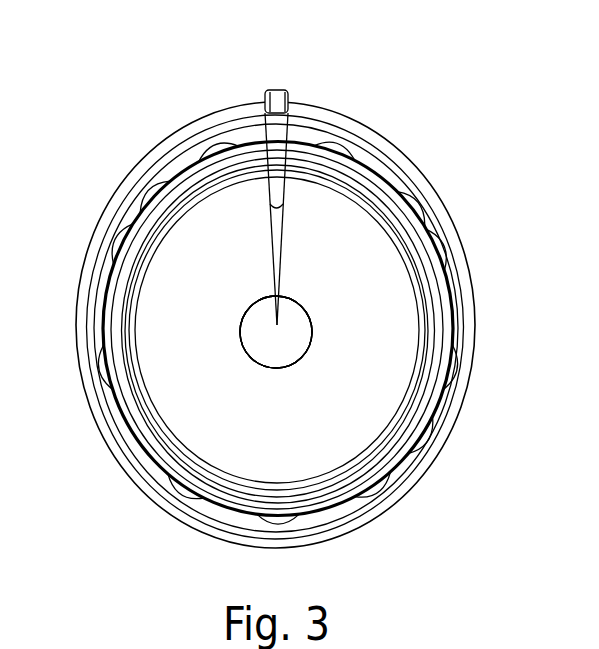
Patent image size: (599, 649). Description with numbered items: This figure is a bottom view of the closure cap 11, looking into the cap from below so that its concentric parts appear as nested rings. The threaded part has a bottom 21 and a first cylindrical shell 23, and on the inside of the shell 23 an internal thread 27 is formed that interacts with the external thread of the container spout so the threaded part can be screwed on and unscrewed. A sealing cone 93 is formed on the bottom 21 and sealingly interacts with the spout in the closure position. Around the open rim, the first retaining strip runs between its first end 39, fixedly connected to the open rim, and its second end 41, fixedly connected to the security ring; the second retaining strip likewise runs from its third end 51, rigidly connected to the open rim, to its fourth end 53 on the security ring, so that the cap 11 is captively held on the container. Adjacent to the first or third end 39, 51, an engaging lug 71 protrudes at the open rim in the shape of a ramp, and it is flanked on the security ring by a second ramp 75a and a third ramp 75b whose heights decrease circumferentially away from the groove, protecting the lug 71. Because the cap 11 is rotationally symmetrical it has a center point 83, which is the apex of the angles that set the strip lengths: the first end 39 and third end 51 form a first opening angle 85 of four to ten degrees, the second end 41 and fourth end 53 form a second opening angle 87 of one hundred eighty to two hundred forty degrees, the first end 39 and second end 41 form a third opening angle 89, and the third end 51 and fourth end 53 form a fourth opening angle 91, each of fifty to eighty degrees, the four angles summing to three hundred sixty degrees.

The closure cap 11 is at (399, 122).
The bottom 21 is at (405, 326).
The first cylindrical shell 23 is at (466, 293).
The internal thread 27 is at (421, 432).
The first end 39 is at (262, 98).
The second end 41 is at (277, 325).
The third end 51 is at (301, 113).
The fourth end 53 is at (278, 326).
The engaging lug 71 is at (278, 91).
The second ramp 75a is at (256, 105).
The third ramp 75b is at (293, 106).
The center point 83 is at (278, 326).
The first opening angle 85 is at (288, 216).
The second opening angle 87 is at (297, 367).
The third opening angle 89 is at (268, 296).
The fourth opening angle 91 is at (296, 298).
The sealing cone 93 is at (230, 470).